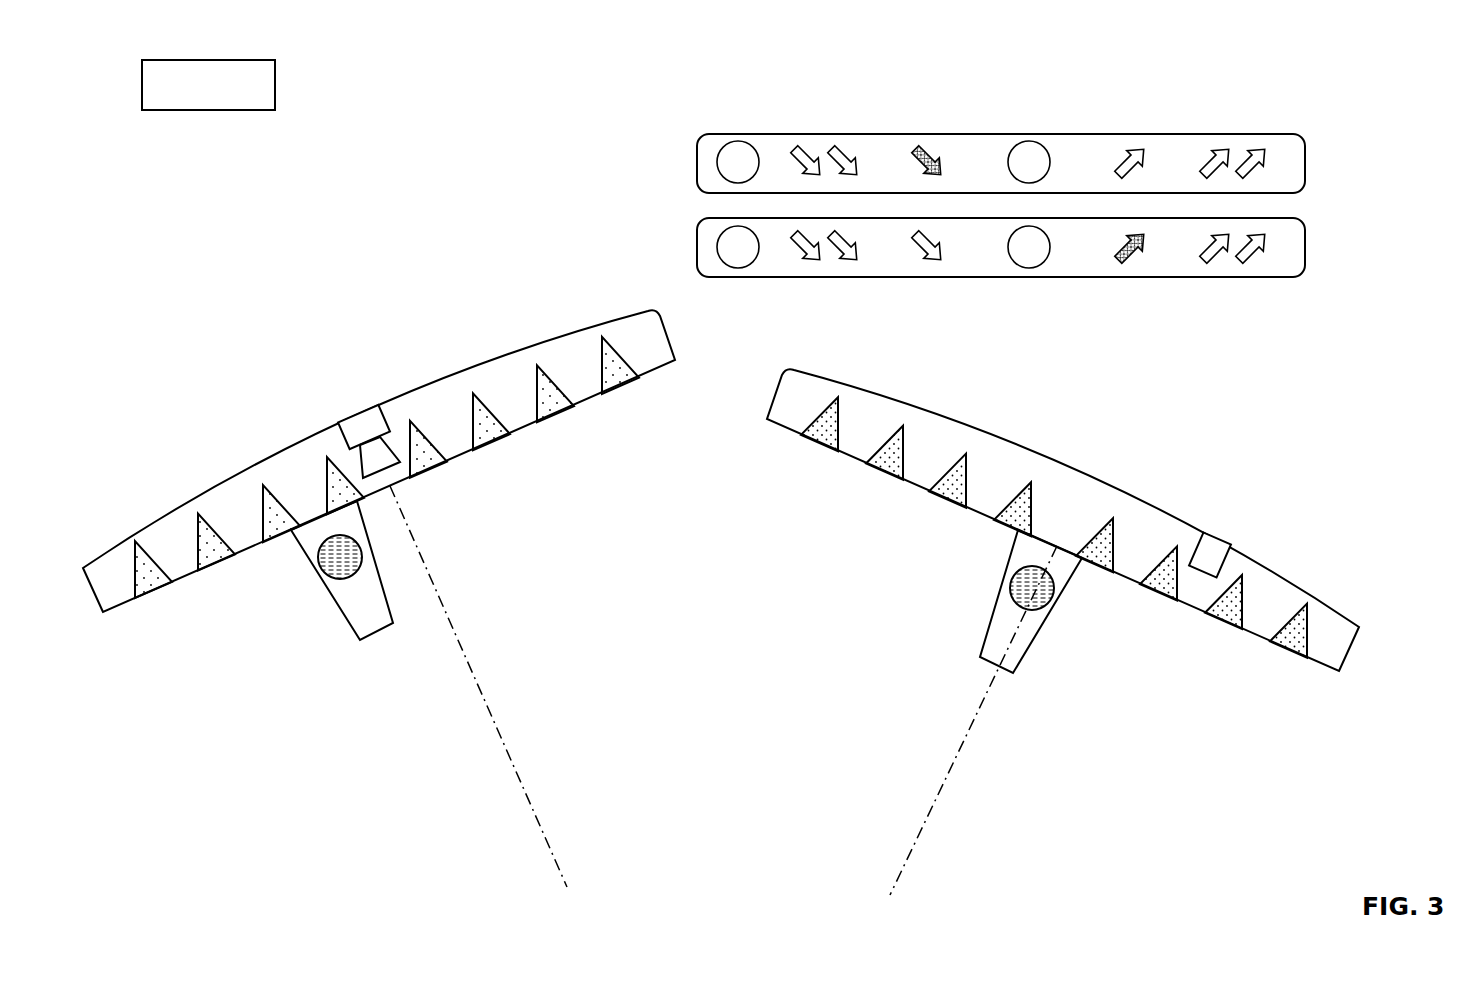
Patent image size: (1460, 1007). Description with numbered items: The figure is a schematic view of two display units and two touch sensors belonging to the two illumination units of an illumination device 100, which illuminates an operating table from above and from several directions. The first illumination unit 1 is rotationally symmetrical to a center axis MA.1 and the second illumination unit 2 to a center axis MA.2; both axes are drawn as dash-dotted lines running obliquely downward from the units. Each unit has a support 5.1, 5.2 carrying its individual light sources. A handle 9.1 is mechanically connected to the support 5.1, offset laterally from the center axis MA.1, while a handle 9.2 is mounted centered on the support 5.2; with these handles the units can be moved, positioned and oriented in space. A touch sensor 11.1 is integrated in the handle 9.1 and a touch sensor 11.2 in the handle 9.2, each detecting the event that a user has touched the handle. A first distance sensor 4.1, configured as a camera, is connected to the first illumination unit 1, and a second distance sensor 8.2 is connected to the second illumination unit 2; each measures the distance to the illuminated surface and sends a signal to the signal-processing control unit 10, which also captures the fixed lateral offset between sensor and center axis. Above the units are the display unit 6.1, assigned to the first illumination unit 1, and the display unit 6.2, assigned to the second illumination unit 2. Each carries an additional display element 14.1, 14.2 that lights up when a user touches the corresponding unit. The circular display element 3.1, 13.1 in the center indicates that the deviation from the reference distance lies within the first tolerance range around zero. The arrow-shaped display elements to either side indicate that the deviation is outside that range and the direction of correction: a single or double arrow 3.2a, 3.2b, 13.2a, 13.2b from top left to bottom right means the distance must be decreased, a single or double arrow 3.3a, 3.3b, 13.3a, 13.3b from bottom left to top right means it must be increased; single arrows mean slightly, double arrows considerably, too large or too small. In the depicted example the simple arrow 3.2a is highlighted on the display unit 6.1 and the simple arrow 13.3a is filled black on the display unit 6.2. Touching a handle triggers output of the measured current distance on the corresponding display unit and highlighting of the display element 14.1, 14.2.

The control unit 10 is at (208, 85).
The illumination device 100 is at (462, 176).
The first illumination unit 1 is at (379, 583).
The second illumination unit 2 is at (1063, 623).
The support 5.1 is at (473, 356).
The support 5.2 is at (1008, 440).
The first distance sensor 4.1 is at (356, 420).
The second distance sensor 8.2 is at (1213, 547).
The handle 9.1 is at (331, 608).
The handle 9.2 is at (996, 606).
The touch sensor 11.1 is at (319, 562).
The touch sensor 11.2 is at (1042, 603).
The center axis MA.1 is at (487, 702).
The center axis MA.2 is at (960, 745).
The display unit 6.1 is at (1182, 133).
The display unit 6.2 is at (1167, 277).
The display element 14.1 is at (722, 146).
The display element 14.2 is at (717, 247).
The circular display element 3.1 is at (1045, 148).
The arrow-shaped display element 3.2a is at (930, 150).
The arrow-shaped display element 3.2b is at (803, 146).
The arrow-shaped display element 3.3a is at (1131, 150).
The arrow-shaped display element 3.3b is at (1250, 150).
The circular display element 13.1 is at (1014, 265).
The arrow-shaped display element 13.2a is at (918, 252).
The arrow-shaped display element 13.2b is at (800, 252).
The arrow-shaped display element 13.3a is at (1110, 258).
The arrow-shaped display element 13.3b is at (1253, 258).